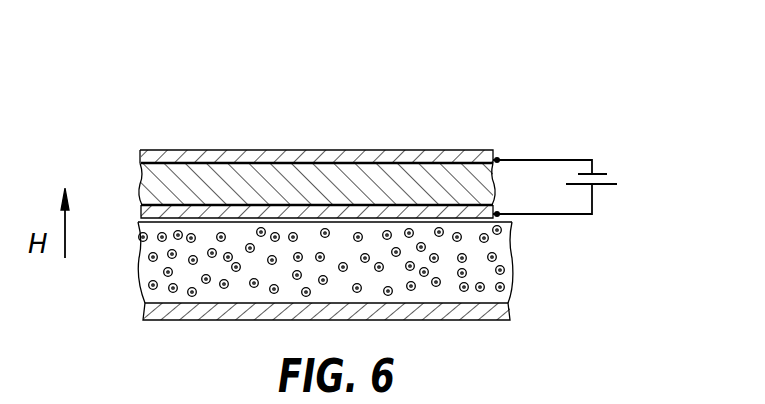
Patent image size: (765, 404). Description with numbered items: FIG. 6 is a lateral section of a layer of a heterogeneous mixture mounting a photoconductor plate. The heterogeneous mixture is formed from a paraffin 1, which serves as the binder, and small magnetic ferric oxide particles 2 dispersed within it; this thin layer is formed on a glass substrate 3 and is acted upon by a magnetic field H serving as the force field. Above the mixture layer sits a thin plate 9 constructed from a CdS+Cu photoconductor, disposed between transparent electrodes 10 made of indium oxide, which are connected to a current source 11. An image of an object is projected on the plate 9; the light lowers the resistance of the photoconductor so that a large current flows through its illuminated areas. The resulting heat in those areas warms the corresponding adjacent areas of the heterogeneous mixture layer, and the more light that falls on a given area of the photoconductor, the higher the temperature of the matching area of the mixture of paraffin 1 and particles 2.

The paraffin 1 is at (180, 296).
The ferric oxide particles 2 is at (505, 270).
The glass substrate 3 is at (484, 313).
The thin plate 9 is at (235, 172).
The transparent electrodes 10 is at (450, 212).
The current source 11 is at (606, 160).